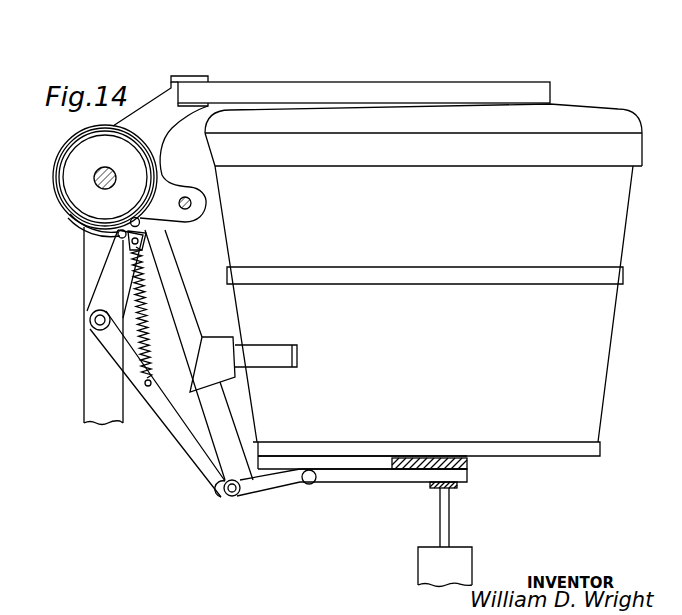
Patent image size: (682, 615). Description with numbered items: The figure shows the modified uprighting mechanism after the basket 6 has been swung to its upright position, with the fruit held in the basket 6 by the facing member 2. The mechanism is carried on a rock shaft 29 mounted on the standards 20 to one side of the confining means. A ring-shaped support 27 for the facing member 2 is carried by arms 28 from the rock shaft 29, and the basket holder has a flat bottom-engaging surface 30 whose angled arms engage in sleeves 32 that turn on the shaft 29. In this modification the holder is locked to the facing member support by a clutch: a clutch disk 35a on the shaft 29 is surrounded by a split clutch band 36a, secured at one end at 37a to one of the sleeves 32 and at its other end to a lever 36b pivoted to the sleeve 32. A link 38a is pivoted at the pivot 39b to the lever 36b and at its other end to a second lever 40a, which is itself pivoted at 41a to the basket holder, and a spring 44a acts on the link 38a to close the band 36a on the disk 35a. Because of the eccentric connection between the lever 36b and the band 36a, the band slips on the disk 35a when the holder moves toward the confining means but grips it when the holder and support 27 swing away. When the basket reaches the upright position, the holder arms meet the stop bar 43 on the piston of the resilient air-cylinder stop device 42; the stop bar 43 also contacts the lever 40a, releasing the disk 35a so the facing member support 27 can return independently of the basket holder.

The facing member 2 is at (622, 113).
The basket 6 is at (613, 237).
The standards 20 is at (95, 390).
The support 27 is at (388, 91).
The arms 28 is at (152, 103).
The rock shaft 29 is at (97, 172).
The flat surface 30 is at (468, 466).
The sleeves 32 is at (163, 283).
The clutch disk 35a is at (70, 178).
The split clutch band 36a is at (80, 225).
The lever 36b is at (107, 293).
The securing point 37a is at (147, 227).
The link 38a is at (202, 458).
The pivot 39b is at (97, 328).
The lever 40a is at (370, 480).
The pivot 41a is at (308, 481).
The resilient stop device 42 is at (428, 568).
The stop bar 43 is at (457, 500).
The spring 44a is at (148, 345).